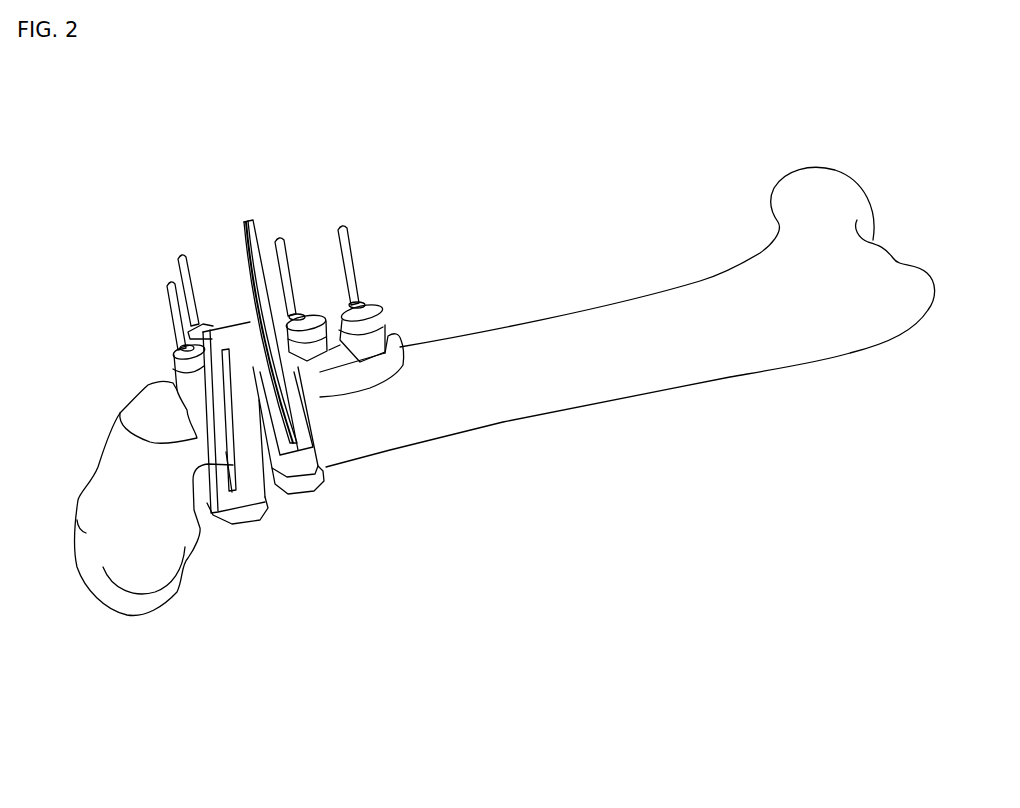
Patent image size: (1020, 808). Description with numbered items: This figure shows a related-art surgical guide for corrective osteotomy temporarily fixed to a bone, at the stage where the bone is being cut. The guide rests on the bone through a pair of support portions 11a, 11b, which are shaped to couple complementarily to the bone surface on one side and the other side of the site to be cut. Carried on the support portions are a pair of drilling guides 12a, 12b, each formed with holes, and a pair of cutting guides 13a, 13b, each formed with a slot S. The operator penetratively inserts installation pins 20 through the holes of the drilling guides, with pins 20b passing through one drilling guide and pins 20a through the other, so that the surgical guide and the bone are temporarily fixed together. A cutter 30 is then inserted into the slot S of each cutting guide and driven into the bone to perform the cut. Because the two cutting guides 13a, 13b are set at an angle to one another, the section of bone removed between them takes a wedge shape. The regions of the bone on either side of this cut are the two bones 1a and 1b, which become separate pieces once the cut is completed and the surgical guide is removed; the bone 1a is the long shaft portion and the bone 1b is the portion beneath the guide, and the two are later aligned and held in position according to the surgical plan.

The bone 1a is at (492, 403).
The bone 1b is at (142, 510).
The support portion 11a is at (393, 335).
The support portion 11b is at (147, 417).
The drilling guide 12a is at (363, 307).
The drilling guide 12b is at (187, 388).
The cutting guide 13a is at (308, 478).
The cutting guide 13b is at (250, 503).
The installation pins 20 is at (258, 227).
The installation pin 20a is at (345, 248).
The installation pin 20b is at (189, 297).
The cutter 30 is at (288, 382).
The slot S is at (213, 517).